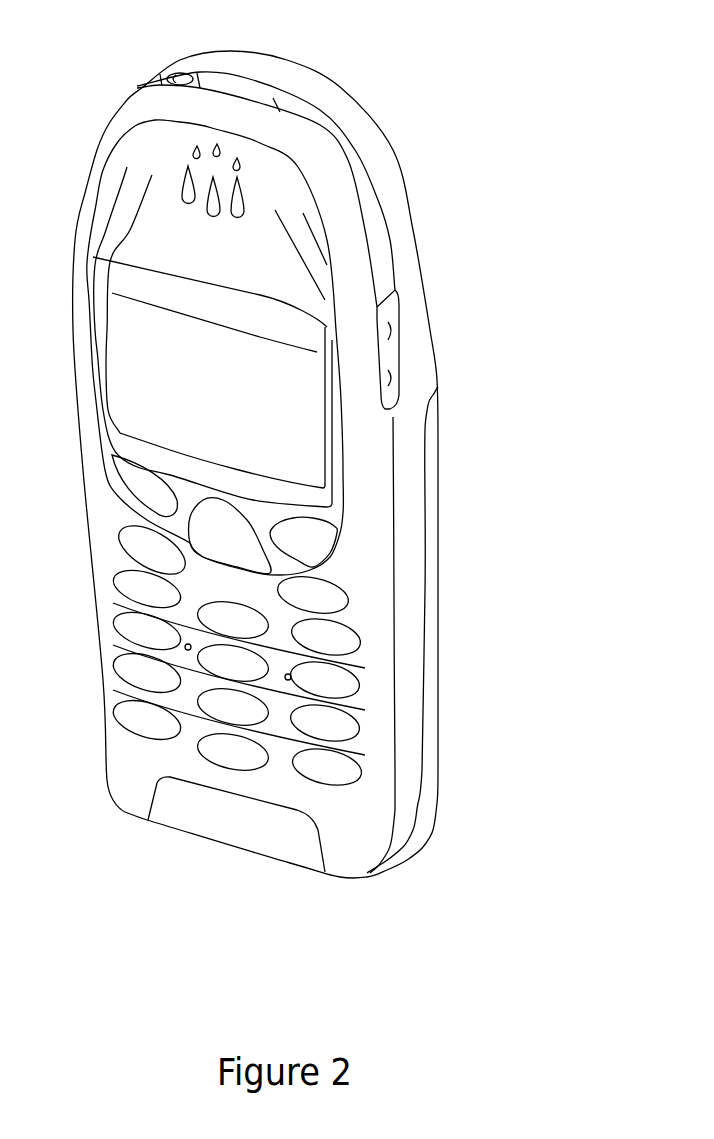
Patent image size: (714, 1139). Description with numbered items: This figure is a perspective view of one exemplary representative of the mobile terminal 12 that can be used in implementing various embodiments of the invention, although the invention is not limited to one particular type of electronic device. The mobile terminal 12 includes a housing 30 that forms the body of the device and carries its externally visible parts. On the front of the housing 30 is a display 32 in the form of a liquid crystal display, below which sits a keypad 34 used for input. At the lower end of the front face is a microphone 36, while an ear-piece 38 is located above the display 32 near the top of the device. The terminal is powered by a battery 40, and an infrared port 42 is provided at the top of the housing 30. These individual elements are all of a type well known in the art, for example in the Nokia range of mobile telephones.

The mobile terminal 12 is at (374, 63).
The housing 30 is at (403, 218).
The display 32 is at (297, 433).
The keypad 34 is at (325, 773).
The microphone 36 is at (177, 813).
The ear-piece 38 is at (200, 177).
The battery 40 is at (431, 753).
The infrared port 42 is at (240, 85).